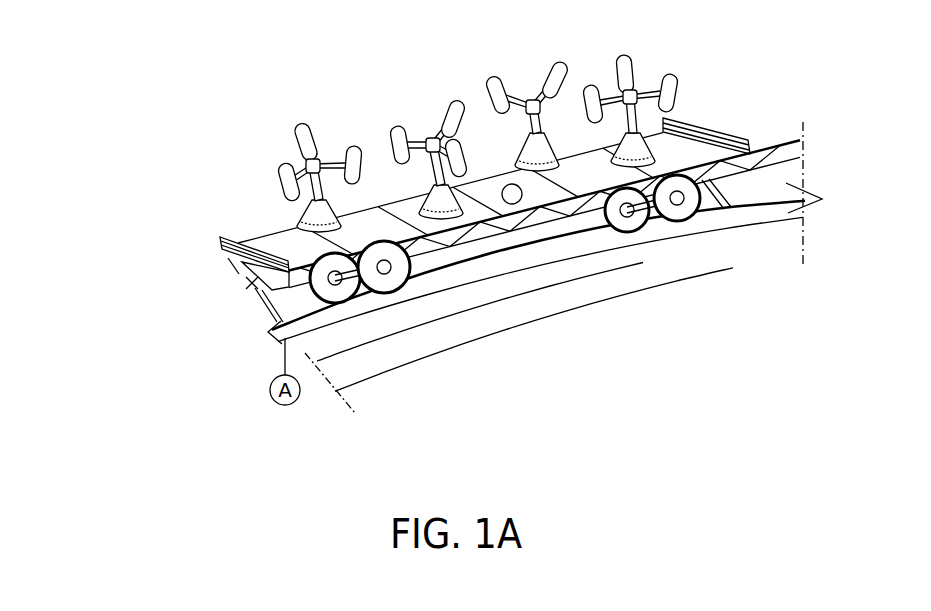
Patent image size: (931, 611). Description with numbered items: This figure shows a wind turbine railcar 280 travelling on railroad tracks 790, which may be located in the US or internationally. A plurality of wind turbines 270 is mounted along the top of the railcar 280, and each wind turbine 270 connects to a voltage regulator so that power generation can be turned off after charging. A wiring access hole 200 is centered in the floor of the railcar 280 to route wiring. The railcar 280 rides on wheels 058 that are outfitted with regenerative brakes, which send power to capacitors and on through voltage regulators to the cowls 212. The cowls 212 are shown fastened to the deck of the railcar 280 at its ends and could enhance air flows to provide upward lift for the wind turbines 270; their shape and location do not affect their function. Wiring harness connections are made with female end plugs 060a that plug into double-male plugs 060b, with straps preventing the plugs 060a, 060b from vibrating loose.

The cowl 212 is at (222, 235).
The wind turbine 270 is at (304, 124).
The wiring access hole 200 is at (512, 184).
The wheel 058 is at (334, 306).
The wind turbine railcar 280 is at (730, 214).
The railroad track 790 is at (497, 309).
The female end plug 060a is at (165, 290).
The double-male plug 060b is at (258, 284).